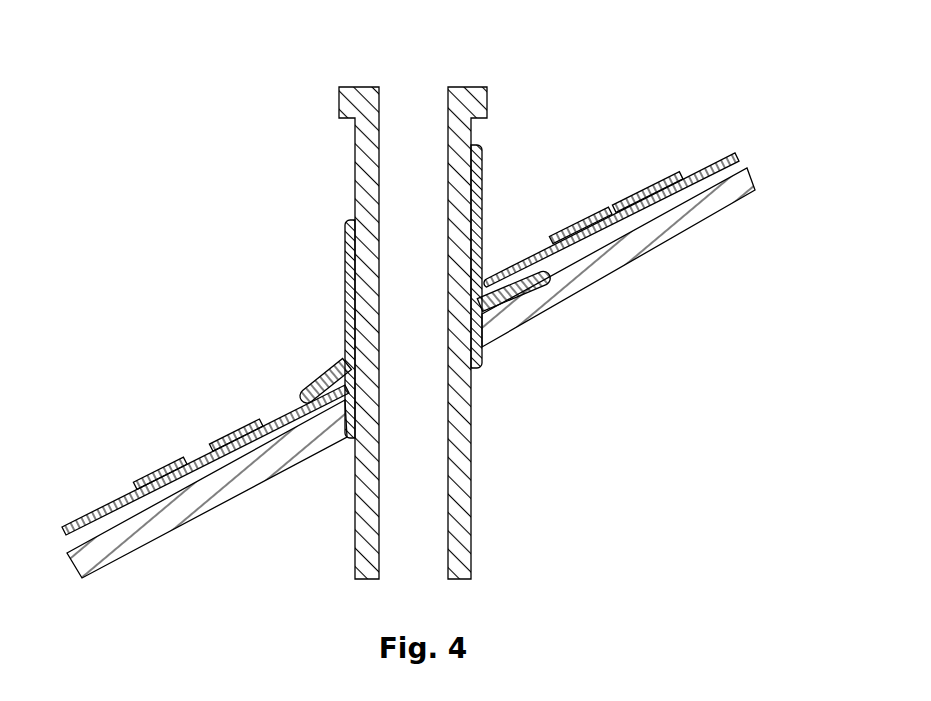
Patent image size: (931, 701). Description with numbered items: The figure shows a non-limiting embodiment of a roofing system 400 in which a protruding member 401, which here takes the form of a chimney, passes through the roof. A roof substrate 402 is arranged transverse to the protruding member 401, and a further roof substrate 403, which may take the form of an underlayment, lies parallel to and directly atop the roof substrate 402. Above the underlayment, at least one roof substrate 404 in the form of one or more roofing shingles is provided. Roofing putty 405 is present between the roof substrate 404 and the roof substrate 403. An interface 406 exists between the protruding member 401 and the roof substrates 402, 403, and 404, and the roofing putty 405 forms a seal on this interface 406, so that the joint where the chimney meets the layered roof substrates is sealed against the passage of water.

The roofing system 400 is at (442, 66).
The protruding member 401 is at (348, 90).
The roof substrate 402 is at (755, 180).
The roof substrate 403 is at (748, 170).
The roof substrate 404 is at (87, 513).
The roofing putty 405 is at (345, 268).
The interface 406 is at (308, 390).